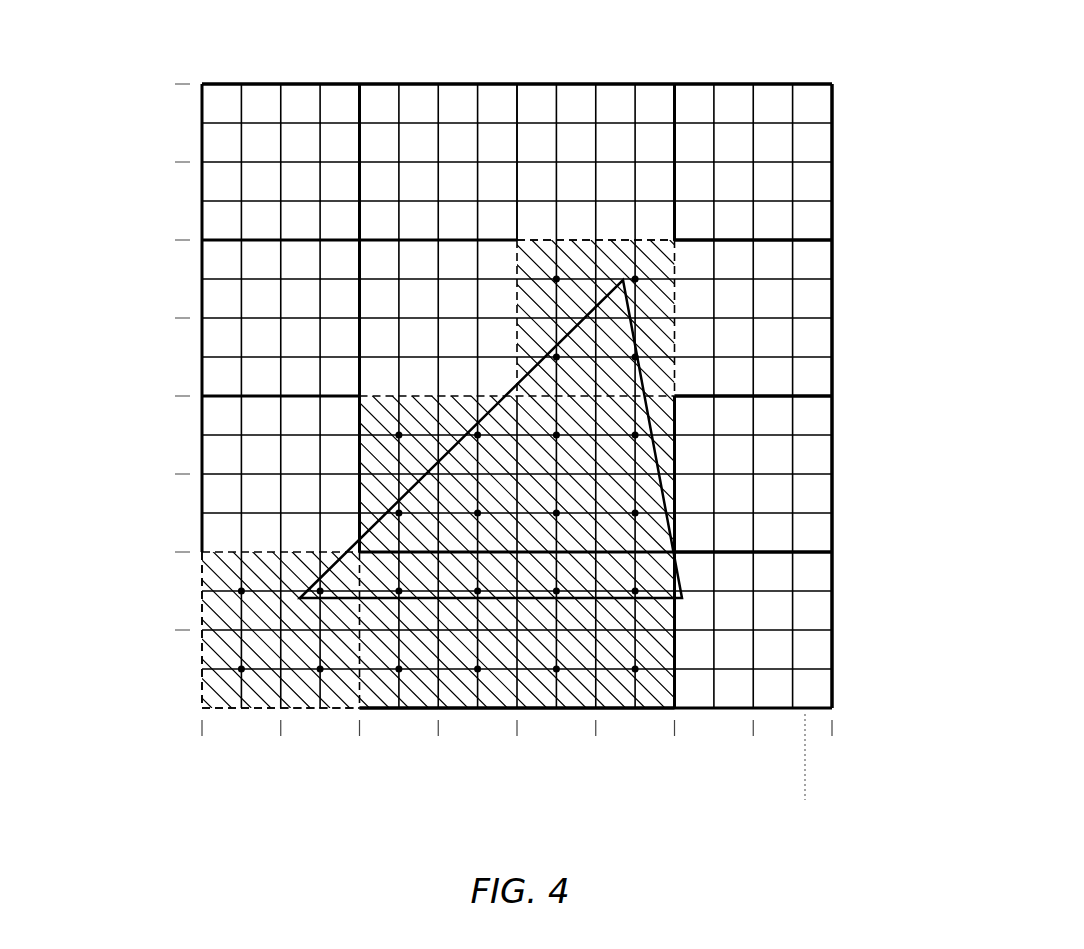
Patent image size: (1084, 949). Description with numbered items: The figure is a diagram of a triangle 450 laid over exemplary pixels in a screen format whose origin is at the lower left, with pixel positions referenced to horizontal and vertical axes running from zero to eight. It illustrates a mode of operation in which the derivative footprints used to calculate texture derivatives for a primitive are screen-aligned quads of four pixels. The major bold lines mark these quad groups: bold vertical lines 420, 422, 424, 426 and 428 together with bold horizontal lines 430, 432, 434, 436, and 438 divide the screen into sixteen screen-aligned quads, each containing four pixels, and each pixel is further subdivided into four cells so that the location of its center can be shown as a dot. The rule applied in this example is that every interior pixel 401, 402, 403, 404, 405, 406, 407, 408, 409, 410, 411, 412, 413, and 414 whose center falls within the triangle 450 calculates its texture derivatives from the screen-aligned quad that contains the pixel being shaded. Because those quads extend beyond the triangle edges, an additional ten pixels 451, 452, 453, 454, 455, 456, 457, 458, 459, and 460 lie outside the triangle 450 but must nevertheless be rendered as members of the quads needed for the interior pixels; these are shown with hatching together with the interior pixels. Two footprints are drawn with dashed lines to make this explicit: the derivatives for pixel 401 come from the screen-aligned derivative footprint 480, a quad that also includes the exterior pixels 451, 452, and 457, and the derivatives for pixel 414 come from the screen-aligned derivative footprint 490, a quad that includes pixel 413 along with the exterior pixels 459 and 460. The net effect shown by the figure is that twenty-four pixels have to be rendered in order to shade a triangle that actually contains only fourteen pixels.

The interior pixel 401 is at (321, 593).
The interior pixel 402 is at (400, 593).
The interior pixel 403 is at (479, 593).
The interior pixel 404 is at (558, 593).
The interior pixel 405 is at (637, 593).
The interior pixel 406 is at (398, 512).
The interior pixel 407 is at (477, 515).
The interior pixel 408 is at (556, 515).
The interior pixel 409 is at (635, 515).
The interior pixel 410 is at (479, 437).
The interior pixel 411 is at (558, 437).
The interior pixel 412 is at (637, 437).
The interior pixel 413 is at (555, 356).
The interior pixel 414 is at (636, 356).
The bold vertical line 420 is at (202, 103).
The bold vertical line 422 is at (360, 108).
The bold vertical line 424 is at (517, 108).
The bold vertical line 426 is at (675, 108).
The bold vertical line 428 is at (833, 104).
The bold horizontal line 430 is at (805, 800).
The bold horizontal line 432 is at (815, 554).
The bold horizontal line 434 is at (813, 398).
The bold horizontal line 436 is at (813, 241).
The bold horizontal line 438 is at (737, 84).
The triangle 450 is at (652, 420).
The exterior pixel 451 is at (251, 690).
The exterior pixel 452 is at (329, 690).
The exterior pixel 453 is at (407, 690).
The exterior pixel 454 is at (486, 690).
The exterior pixel 455 is at (565, 690).
The exterior pixel 456 is at (644, 690).
The exterior pixel 457 is at (242, 593).
The exterior pixel 458 is at (398, 434).
The exterior pixel 459 is at (555, 278).
The exterior pixel 460 is at (636, 278).
The screen aligned derivative footprint 480 is at (202, 683).
The screen aligned derivative footprint 490 is at (583, 238).